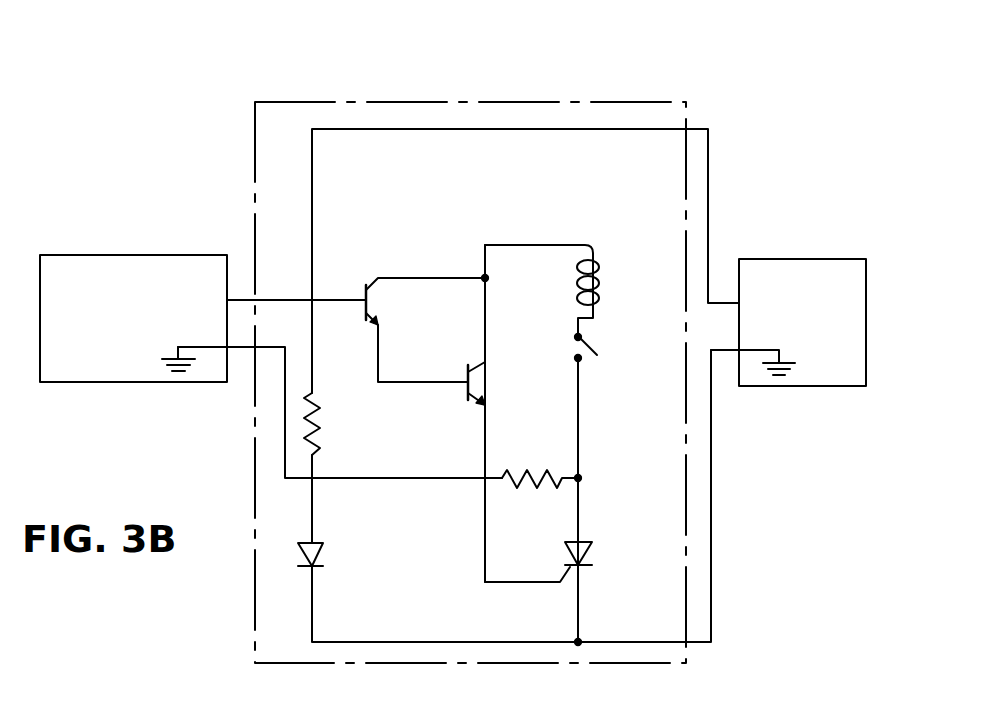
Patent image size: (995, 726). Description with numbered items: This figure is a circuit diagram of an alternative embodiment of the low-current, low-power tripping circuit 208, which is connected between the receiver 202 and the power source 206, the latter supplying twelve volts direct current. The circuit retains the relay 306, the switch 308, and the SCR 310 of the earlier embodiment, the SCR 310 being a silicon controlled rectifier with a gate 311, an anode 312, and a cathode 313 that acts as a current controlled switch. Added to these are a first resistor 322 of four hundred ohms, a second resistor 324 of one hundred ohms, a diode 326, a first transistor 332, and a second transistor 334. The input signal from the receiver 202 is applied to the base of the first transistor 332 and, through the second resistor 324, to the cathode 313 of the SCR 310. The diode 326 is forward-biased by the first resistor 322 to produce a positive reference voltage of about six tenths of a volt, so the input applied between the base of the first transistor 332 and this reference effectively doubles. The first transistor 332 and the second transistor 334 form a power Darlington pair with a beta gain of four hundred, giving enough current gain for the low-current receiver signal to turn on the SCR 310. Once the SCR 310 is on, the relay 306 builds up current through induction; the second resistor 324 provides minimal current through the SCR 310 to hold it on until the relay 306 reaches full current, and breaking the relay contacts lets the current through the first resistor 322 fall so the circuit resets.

The receiver 202 is at (127, 255).
The power source 206 is at (807, 259).
The tripping circuit 208 is at (414, 101).
The relay 306 is at (600, 272).
The switch 308 is at (590, 347).
The SCR 310 is at (566, 566).
The gate 311 is at (553, 583).
The anode 312 is at (582, 541).
The cathode 313 is at (580, 567).
The first resistor 322 is at (320, 423).
The second resistor 324 is at (534, 466).
The diode 326 is at (319, 550).
The first transistor 332 is at (486, 378).
The second transistor 334 is at (384, 300).